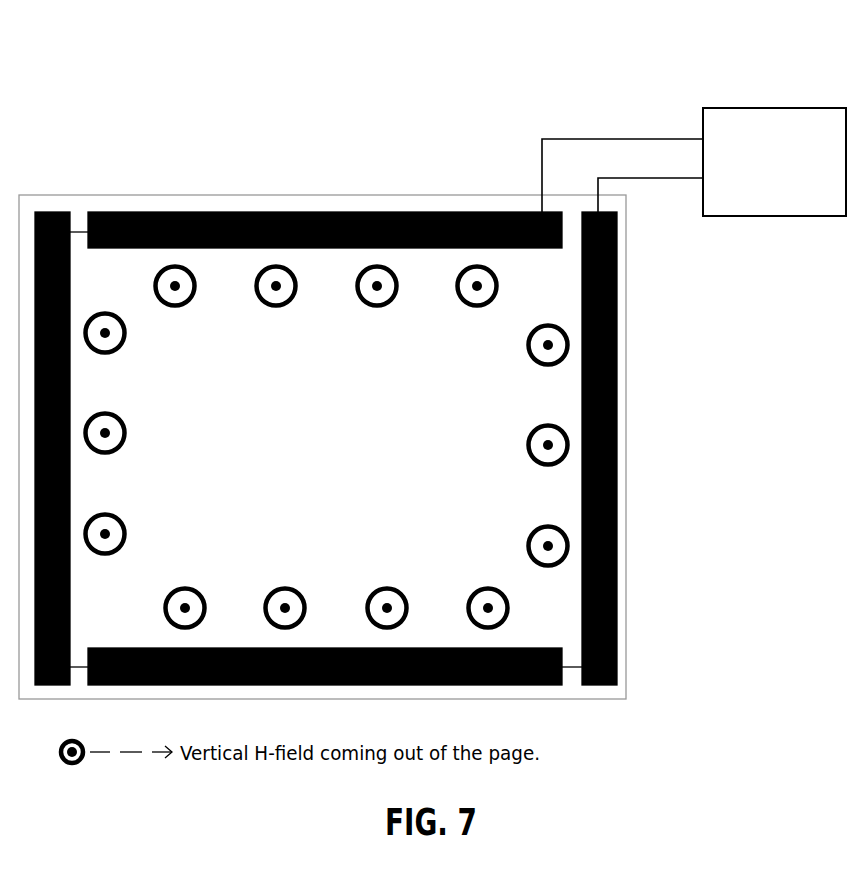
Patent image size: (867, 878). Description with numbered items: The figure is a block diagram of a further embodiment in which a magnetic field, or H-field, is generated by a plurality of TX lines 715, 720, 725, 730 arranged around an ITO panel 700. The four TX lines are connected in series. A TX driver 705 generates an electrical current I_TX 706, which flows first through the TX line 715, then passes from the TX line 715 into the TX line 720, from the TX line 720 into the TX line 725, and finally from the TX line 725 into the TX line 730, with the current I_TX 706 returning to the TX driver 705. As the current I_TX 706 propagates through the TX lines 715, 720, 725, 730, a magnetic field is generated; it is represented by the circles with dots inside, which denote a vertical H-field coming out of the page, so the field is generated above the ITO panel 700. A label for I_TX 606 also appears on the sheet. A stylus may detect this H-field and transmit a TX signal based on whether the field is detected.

The TX current 606 is at (307, 12).
The ITO panel 700 is at (266, 195).
The TX driver 705 is at (774, 162).
The current I_TX 706 is at (642, 122).
The TX line 715 is at (325, 230).
The TX line 720 is at (50, 212).
The TX line 725 is at (325, 666).
The TX line 730 is at (617, 452).